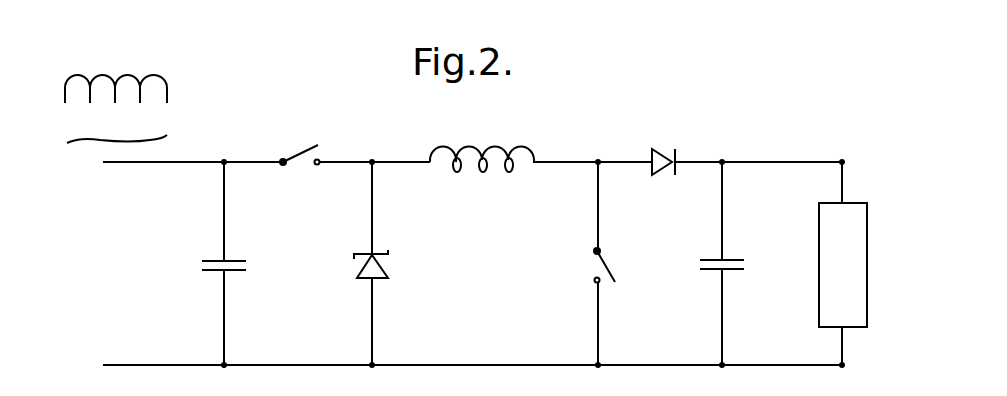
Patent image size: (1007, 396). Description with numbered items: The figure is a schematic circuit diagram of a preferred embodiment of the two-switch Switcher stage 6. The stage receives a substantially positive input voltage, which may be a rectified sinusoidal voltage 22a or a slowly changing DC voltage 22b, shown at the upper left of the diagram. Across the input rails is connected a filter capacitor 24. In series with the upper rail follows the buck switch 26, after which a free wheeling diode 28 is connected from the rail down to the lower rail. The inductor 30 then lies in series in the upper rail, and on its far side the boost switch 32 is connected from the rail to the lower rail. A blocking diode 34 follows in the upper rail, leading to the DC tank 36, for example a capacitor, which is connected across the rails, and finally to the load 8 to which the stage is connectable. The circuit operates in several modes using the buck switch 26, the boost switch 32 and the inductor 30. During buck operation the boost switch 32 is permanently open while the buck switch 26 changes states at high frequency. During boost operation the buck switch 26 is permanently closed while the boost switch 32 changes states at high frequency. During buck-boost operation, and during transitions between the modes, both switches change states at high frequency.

The rectified sinusoidal input voltage 22a is at (80, 77).
The slowly changing DC input voltage 22b is at (107, 140).
The filter capacitor 24 is at (213, 258).
The buck switch 26 is at (316, 146).
The free wheeling diode 28 is at (353, 263).
The inductor 30 is at (494, 148).
The boost switch 32 is at (610, 263).
The blocking diode 34 is at (659, 149).
The DC tank 36 is at (734, 272).
The Switcher stage 6 is at (722, 135).
The load 8 is at (836, 232).